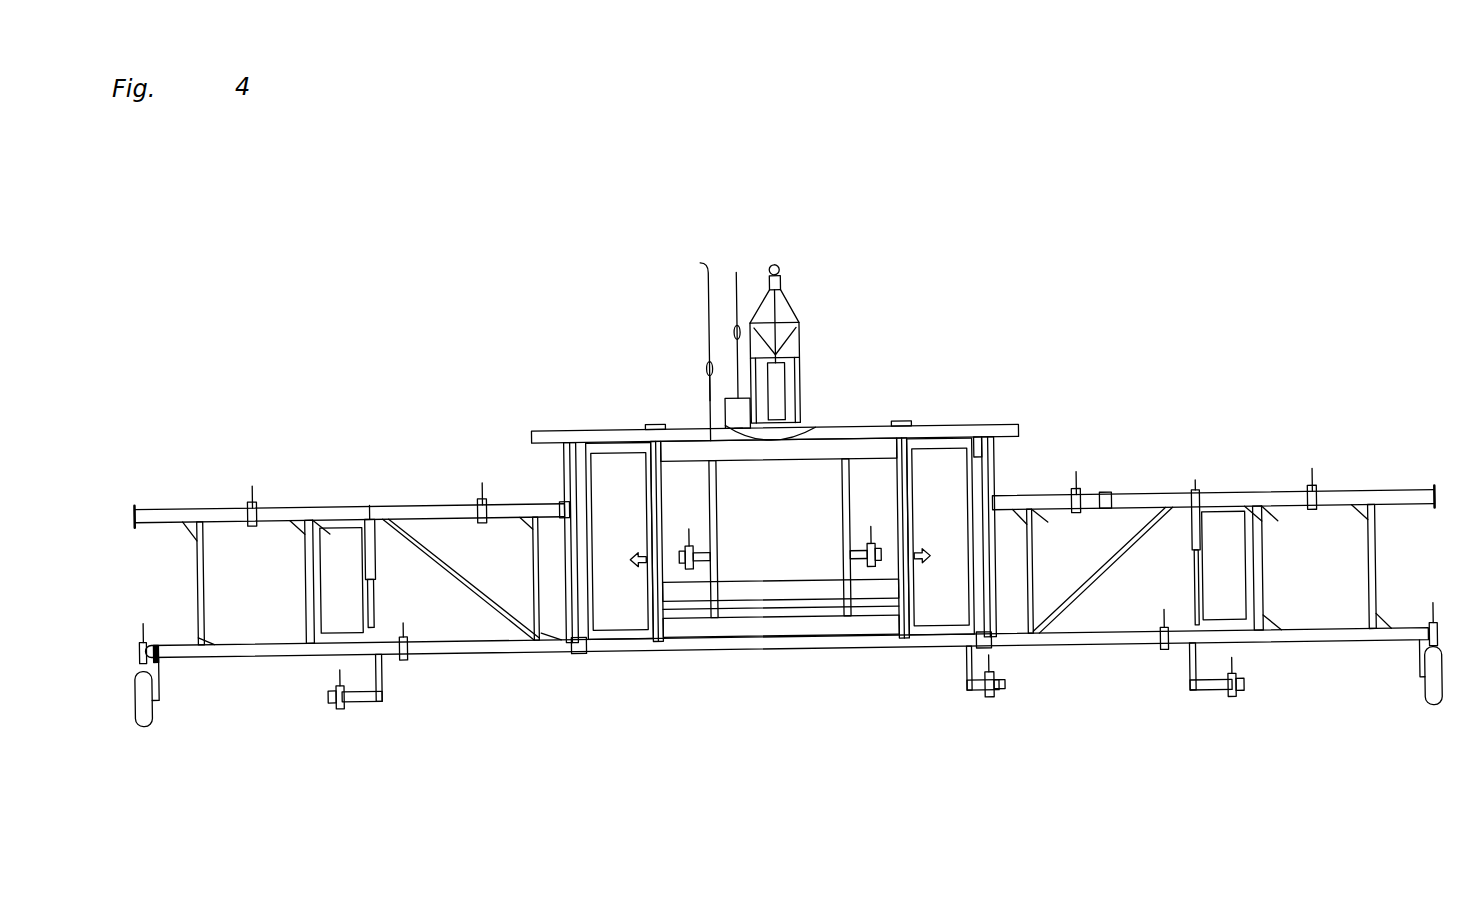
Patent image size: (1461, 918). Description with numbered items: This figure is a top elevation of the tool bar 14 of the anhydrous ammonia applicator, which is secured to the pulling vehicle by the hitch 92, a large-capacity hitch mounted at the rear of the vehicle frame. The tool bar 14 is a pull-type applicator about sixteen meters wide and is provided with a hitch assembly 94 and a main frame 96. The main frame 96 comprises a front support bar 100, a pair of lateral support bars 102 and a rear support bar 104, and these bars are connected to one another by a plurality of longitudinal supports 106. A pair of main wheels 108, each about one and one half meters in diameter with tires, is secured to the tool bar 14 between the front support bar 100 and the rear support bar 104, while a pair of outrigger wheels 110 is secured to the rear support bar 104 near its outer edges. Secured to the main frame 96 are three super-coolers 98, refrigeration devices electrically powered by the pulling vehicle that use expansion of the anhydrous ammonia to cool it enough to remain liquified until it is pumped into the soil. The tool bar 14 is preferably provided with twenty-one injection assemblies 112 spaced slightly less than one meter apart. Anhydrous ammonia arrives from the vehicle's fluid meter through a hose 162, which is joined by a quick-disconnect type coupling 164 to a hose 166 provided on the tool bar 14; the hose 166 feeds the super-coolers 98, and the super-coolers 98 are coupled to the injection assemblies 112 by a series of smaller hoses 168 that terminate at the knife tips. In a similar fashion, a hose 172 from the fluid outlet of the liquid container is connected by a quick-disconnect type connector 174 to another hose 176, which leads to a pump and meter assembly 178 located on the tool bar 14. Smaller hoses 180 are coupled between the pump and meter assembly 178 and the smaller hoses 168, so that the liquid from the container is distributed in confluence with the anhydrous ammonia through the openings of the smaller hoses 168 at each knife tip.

The tool bar 14 is at (1172, 257).
The hitch 92 is at (784, 268).
The hitch assembly 94 is at (800, 297).
The main frame 96 is at (937, 328).
The super-coolers 98 is at (862, 437).
The front support bar 100 is at (967, 430).
The lateral support bars 102 is at (1145, 503).
The rear support bar 104 is at (775, 650).
The longitudinal supports 106 is at (1035, 582).
The main wheels 108 is at (945, 493).
The outrigger wheels 110 is at (137, 720).
The injection assemblies 112 is at (993, 716).
The hose 162 is at (708, 266).
The quick-disconnect type coupling 164 is at (712, 366).
The hose 166 is at (711, 388).
The smaller hoses 168 is at (978, 450).
The hose 172 is at (740, 270).
The quick-disconnect type connector 174 is at (742, 328).
The hose 176 is at (740, 388).
The pump and meter assembly 178 is at (740, 430).
The smaller hoses 180 is at (815, 428).